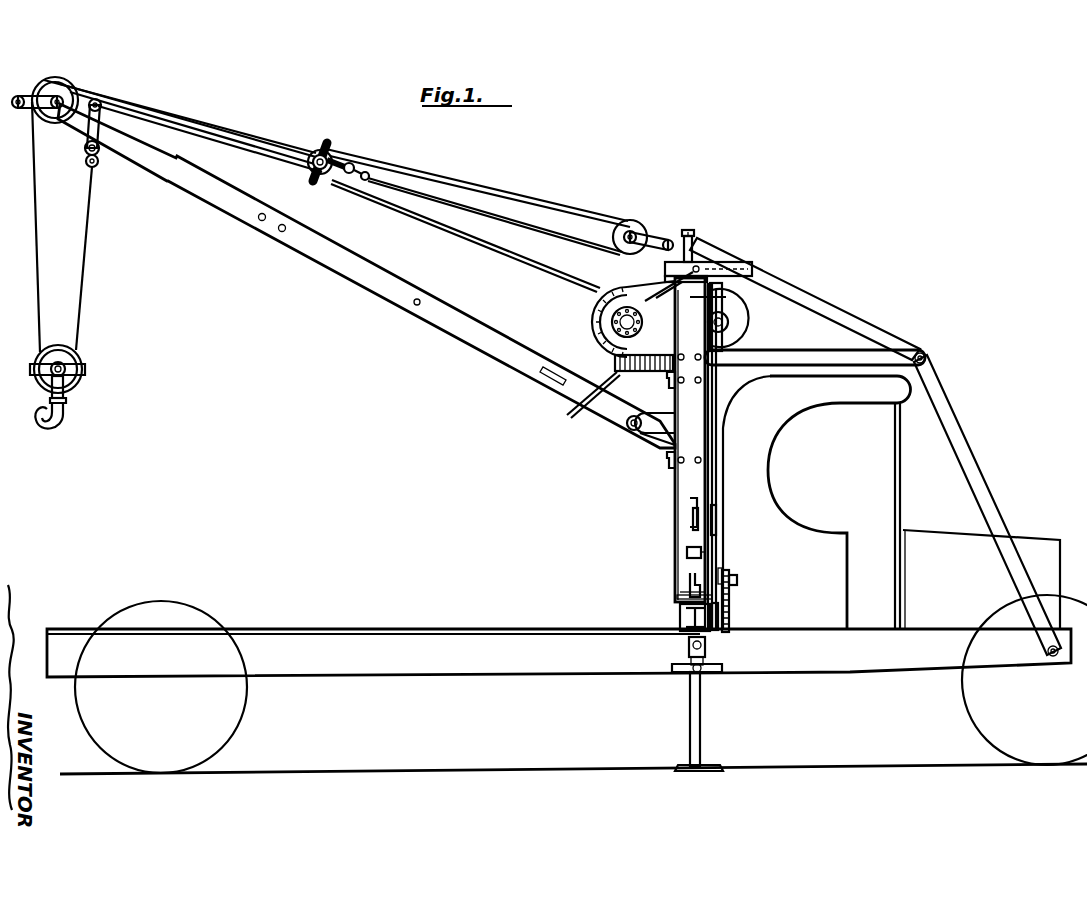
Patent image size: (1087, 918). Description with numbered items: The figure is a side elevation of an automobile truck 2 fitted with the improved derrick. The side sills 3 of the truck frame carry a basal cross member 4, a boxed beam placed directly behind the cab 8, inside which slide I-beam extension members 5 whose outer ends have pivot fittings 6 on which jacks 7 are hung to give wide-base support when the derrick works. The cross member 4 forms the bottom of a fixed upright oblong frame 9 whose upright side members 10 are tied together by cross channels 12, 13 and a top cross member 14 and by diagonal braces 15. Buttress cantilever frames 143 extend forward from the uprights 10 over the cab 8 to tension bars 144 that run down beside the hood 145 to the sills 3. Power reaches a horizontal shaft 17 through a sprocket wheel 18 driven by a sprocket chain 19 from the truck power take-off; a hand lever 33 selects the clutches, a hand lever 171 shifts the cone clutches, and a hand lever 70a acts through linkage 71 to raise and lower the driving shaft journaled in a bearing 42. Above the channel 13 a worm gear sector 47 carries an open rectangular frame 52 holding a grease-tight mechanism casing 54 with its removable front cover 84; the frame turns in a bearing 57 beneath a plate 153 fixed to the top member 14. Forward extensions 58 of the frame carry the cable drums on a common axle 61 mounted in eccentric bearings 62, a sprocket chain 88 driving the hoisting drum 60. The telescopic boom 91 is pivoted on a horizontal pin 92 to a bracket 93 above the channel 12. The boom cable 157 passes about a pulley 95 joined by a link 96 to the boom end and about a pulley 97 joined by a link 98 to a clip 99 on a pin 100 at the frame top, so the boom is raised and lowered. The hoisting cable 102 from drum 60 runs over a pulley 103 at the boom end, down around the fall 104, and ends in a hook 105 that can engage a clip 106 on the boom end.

The automobile truck 2 is at (905, 516).
The side sills 3 is at (548, 672).
The basal cross member 4 is at (719, 616).
The I-beam extension members 5 is at (690, 620).
The pivot fittings 6 is at (707, 645).
The jacks 7 is at (704, 715).
The cab 8 is at (796, 540).
The fixed upright oblong frame 9 is at (668, 490).
The upright side members 10 is at (706, 435).
The cross channel 12 is at (666, 460).
The cross channel 13 is at (666, 380).
The top cross member 14 is at (754, 270).
The diagonal braces 15 is at (714, 398).
The power-receiving shaft 17 is at (740, 580).
The sprocket wheel 18 is at (729, 571).
The sprocket chain 19 is at (730, 626).
The hand lever 33 is at (686, 552).
The bearing 42 is at (717, 515).
The worm gear sector 47 is at (590, 400).
The open rectangular frame 52 is at (702, 268).
The mechanism casing 54 is at (720, 297).
The bearing 57 is at (678, 288).
The forward extensions 58 is at (630, 292).
The cable drum 60 is at (606, 342).
The horizontal axle 61 is at (610, 312).
The eccentric bearings 62 is at (598, 331).
The hand lever 70a is at (692, 528).
The linkage 71 is at (700, 500).
The removable front cover 84 is at (750, 332).
The sprocket chain 88 is at (742, 320).
The boom 91 is at (466, 337).
The horizontal pin 92 is at (626, 426).
The bracket 93 is at (650, 434).
The pulley 95 is at (340, 150).
The link 96 is at (232, 137).
The pulley 97 is at (638, 222).
The link 98 is at (688, 232).
The clip 99 is at (695, 240).
The pin 100 is at (690, 230).
The hoisting cable 102 is at (132, 104).
The pulley 103 is at (53, 82).
The fall 104 is at (70, 360).
The hook 105 is at (98, 155).
The clip 106 is at (86, 148).
The buttress cantilever frames 143 is at (906, 335).
The tension bars 144 is at (972, 476).
The hood 145 is at (981, 580).
The plate 153 is at (735, 262).
The boom cable 157 is at (478, 220).
The hand lever 171 is at (688, 580).